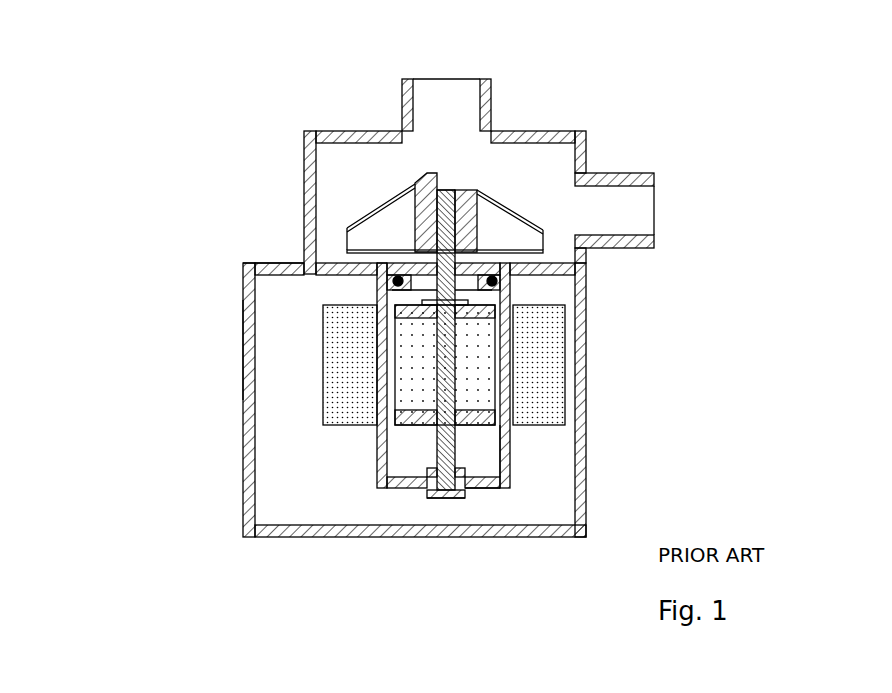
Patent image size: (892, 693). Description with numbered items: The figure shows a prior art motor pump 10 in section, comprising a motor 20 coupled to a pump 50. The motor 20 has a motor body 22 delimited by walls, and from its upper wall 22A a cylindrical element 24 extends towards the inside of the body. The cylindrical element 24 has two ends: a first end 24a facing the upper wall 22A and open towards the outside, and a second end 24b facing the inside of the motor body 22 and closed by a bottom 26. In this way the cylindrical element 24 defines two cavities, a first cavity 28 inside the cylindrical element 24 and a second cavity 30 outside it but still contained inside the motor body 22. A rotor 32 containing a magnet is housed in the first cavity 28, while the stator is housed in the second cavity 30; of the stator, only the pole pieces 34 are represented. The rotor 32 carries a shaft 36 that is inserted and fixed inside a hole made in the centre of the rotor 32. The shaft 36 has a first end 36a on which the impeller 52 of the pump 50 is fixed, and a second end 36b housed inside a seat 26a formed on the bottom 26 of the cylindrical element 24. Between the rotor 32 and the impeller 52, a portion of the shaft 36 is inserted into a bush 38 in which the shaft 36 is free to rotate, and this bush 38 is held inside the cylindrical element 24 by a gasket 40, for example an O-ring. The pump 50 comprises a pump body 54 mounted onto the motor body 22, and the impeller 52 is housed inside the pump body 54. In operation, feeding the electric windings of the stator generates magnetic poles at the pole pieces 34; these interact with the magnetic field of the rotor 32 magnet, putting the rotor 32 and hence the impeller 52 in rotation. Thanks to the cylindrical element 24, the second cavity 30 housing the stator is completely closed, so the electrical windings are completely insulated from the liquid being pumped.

The motor pump 10 is at (150, 108).
The motor 20 is at (242, 353).
The motor body 22 is at (262, 537).
The upper wall 22A is at (252, 262).
The cylindrical element 24 is at (368, 443).
The first end 24a is at (368, 292).
The second end 24b is at (375, 470).
The bottom 26 is at (488, 483).
The seat 26a is at (437, 500).
The first cavity 28 is at (493, 445).
The second cavity 30 is at (562, 488).
The rotor 32 is at (480, 358).
The pole pieces 34 is at (345, 373).
The shaft 36 is at (433, 445).
The first end 36a is at (450, 188).
The second end 36b is at (421, 497).
The bush 38 is at (497, 295).
The gasket 40 is at (510, 262).
The pump 50 is at (300, 160).
The impeller 52 is at (470, 182).
The pump body 54 is at (587, 131).